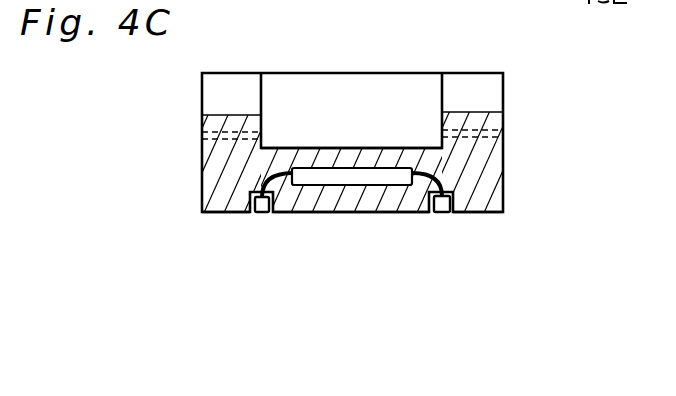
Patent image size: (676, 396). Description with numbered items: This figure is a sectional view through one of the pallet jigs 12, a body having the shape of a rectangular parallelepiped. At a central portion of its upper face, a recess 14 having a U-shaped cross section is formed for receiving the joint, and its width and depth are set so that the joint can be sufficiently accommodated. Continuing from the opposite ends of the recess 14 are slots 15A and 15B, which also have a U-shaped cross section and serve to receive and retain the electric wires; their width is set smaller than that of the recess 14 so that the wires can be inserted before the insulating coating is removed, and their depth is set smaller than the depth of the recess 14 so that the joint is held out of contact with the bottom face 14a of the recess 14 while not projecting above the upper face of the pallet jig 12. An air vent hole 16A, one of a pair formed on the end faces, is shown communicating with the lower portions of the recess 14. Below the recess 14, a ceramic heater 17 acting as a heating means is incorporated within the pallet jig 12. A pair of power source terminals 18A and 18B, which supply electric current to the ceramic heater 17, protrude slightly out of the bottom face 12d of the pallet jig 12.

The pallet jig 12 is at (409, 60).
The bottom face 12d is at (490, 212).
The recess 14 is at (323, 101).
The bottom face of the recess 14a is at (410, 147).
The slot 15A is at (232, 73).
The slot 15B is at (471, 82).
The air vent hole 16A is at (200, 137).
The ceramic heater 17 is at (357, 178).
The power source terminal 18A is at (262, 215).
The power source terminal 18B is at (443, 215).